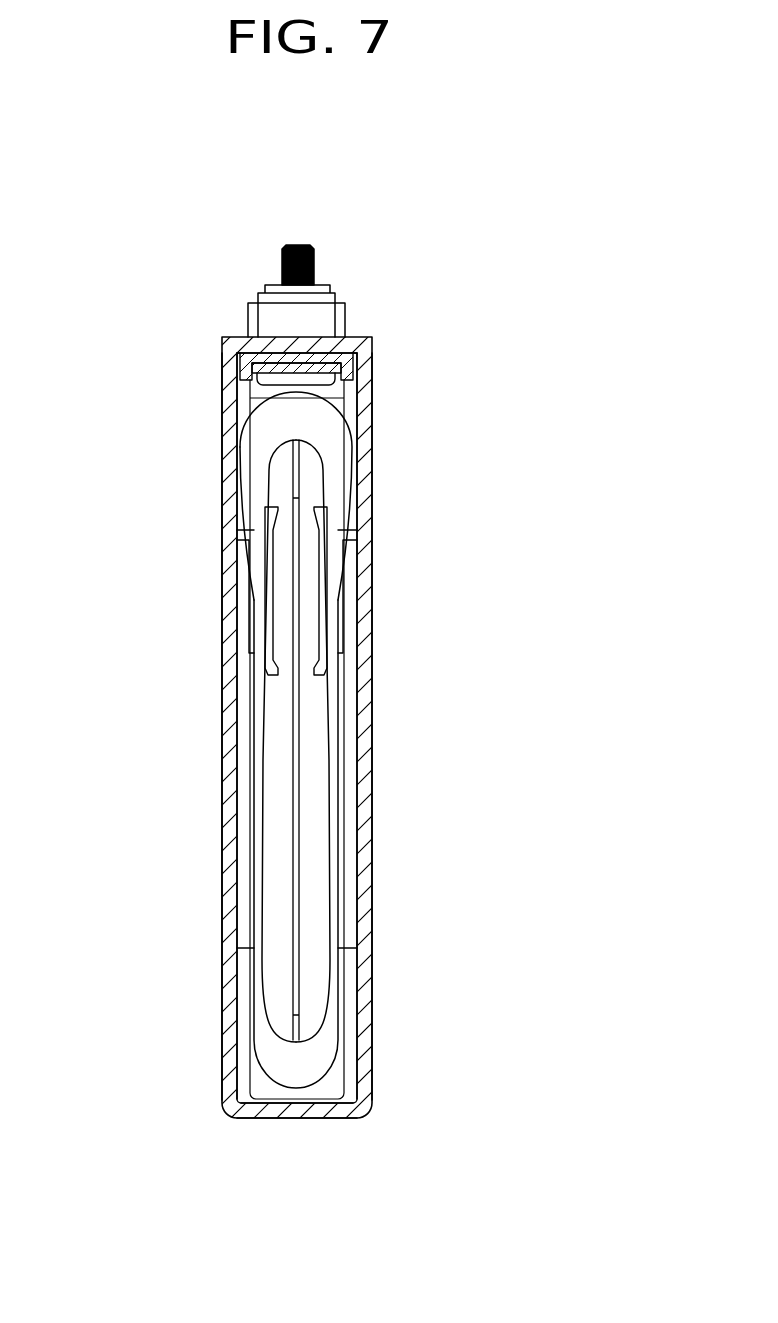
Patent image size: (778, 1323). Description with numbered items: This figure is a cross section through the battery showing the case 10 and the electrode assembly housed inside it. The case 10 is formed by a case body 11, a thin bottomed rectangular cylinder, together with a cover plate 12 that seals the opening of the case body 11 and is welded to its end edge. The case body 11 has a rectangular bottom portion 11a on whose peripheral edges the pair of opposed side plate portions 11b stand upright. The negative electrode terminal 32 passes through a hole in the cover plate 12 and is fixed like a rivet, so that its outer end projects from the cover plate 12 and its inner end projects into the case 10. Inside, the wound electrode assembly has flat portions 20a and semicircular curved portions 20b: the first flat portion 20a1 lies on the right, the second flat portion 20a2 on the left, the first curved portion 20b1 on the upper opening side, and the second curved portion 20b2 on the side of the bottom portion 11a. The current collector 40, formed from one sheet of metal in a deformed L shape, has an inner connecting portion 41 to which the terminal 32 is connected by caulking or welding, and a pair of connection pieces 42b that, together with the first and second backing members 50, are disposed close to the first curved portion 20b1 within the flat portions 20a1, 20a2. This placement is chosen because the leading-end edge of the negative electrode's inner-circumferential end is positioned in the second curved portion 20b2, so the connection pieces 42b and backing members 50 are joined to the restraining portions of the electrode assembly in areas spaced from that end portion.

The case 10 is at (306, 734).
The case body 11 is at (306, 784).
The bottom portion 11a is at (263, 1110).
The side plate portions 11b is at (233, 480).
The cover plate 12 is at (350, 338).
The negative electrode terminal 32 is at (329, 240).
The current collector 40 is at (295, 459).
The inner connecting portion 41 is at (285, 368).
The connection pieces 42b is at (268, 597).
The backing members 50 is at (250, 573).
The flat portion 20a is at (296, 741).
The first flat portion 20a1 is at (333, 748).
The second flat portion 20a2 is at (257, 762).
The curved portion 20b is at (373, 783).
The first curved portion 20b1 is at (300, 415).
The second curved portion 20b2 is at (297, 1072).